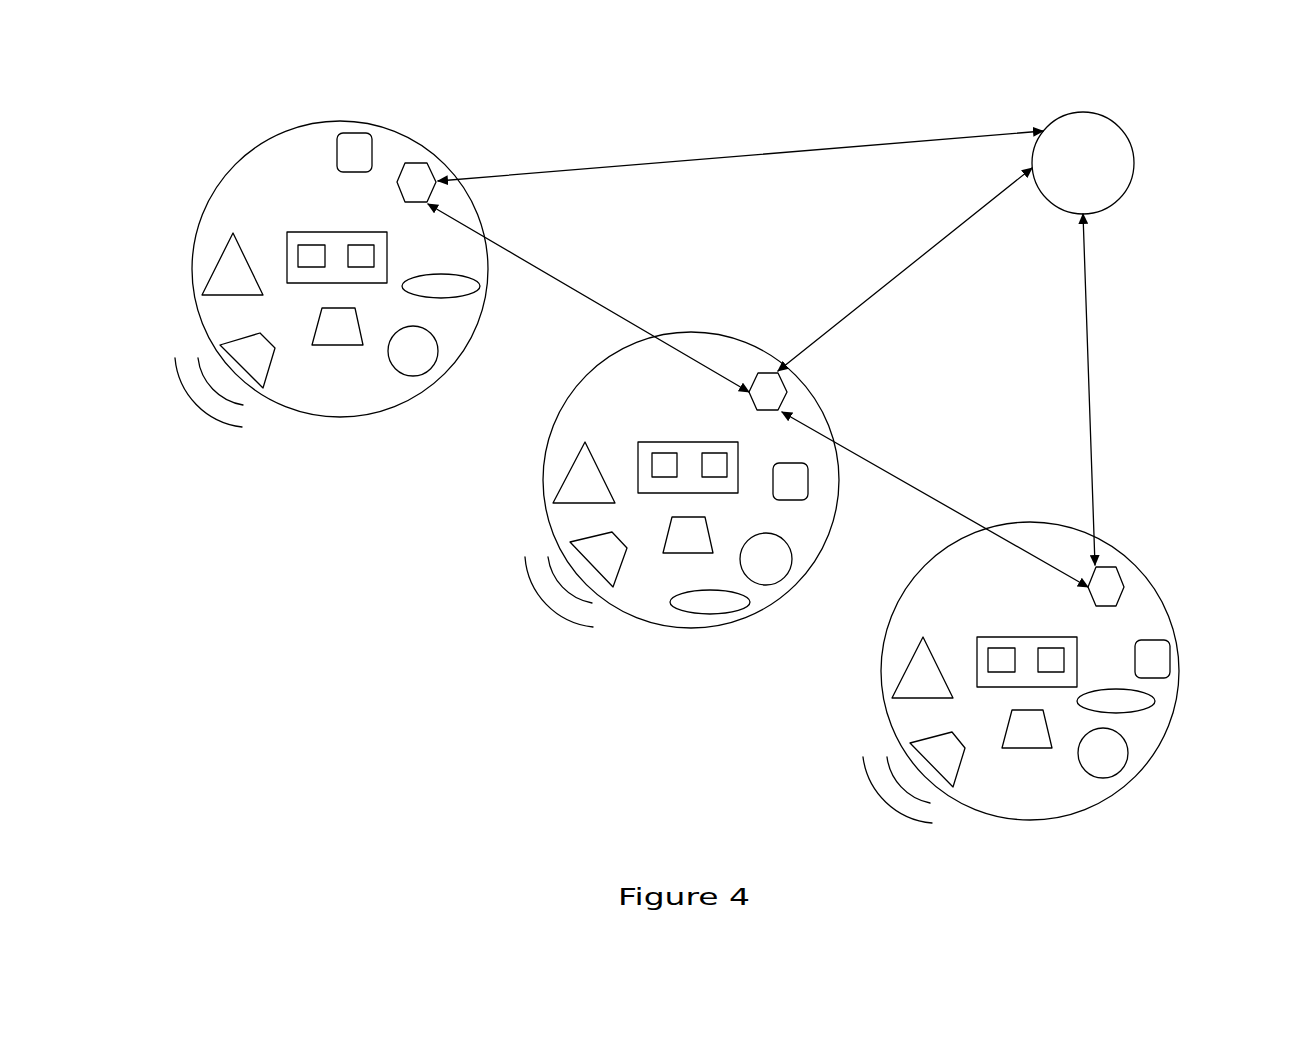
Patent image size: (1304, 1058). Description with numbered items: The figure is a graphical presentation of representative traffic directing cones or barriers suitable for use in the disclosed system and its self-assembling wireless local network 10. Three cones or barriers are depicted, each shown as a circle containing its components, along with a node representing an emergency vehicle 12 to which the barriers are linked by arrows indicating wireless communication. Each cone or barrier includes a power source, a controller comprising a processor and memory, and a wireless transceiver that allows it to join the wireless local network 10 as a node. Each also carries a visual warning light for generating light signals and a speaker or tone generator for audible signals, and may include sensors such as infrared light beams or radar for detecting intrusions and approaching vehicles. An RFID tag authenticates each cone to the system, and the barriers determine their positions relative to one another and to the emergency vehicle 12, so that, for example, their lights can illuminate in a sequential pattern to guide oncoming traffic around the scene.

The self-assembling wireless local network 10 is at (850, 122).
The emergency vehicle 12 is at (1136, 165).